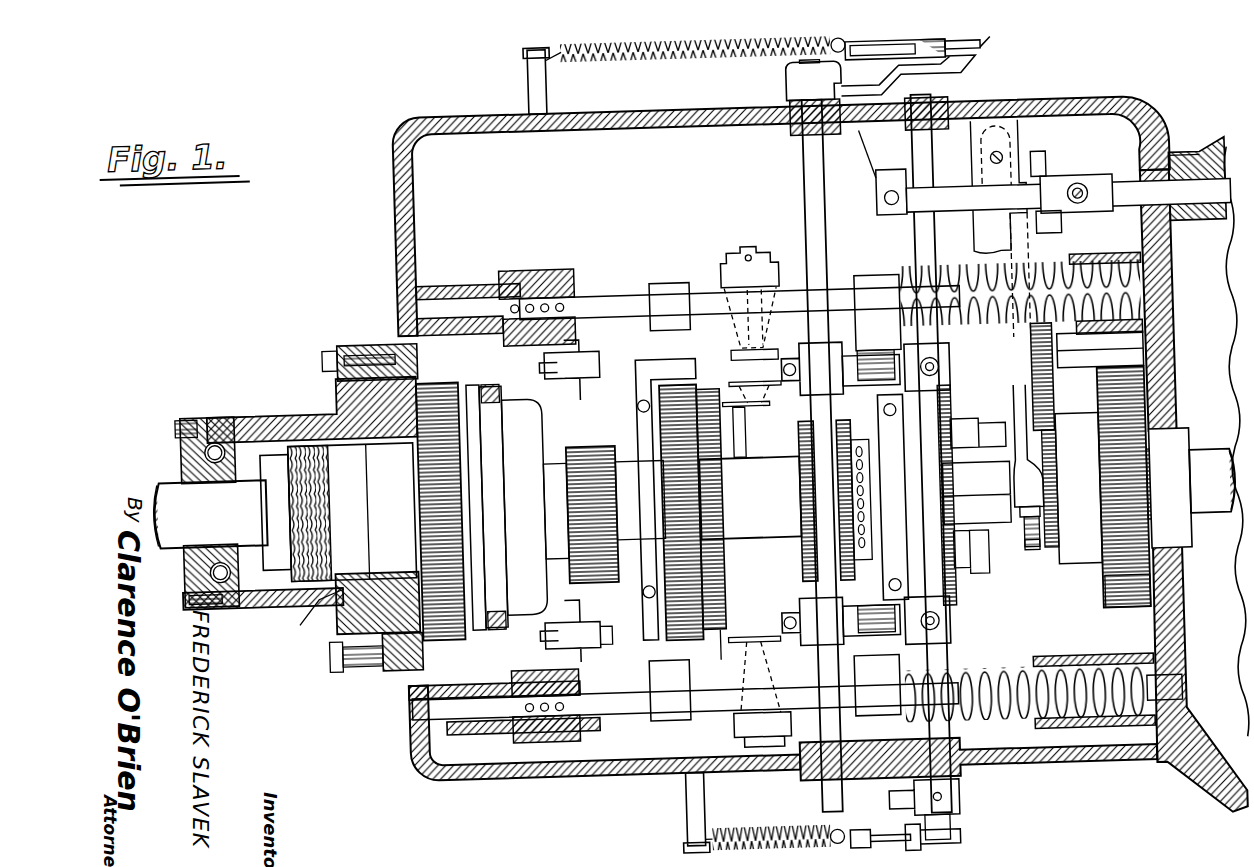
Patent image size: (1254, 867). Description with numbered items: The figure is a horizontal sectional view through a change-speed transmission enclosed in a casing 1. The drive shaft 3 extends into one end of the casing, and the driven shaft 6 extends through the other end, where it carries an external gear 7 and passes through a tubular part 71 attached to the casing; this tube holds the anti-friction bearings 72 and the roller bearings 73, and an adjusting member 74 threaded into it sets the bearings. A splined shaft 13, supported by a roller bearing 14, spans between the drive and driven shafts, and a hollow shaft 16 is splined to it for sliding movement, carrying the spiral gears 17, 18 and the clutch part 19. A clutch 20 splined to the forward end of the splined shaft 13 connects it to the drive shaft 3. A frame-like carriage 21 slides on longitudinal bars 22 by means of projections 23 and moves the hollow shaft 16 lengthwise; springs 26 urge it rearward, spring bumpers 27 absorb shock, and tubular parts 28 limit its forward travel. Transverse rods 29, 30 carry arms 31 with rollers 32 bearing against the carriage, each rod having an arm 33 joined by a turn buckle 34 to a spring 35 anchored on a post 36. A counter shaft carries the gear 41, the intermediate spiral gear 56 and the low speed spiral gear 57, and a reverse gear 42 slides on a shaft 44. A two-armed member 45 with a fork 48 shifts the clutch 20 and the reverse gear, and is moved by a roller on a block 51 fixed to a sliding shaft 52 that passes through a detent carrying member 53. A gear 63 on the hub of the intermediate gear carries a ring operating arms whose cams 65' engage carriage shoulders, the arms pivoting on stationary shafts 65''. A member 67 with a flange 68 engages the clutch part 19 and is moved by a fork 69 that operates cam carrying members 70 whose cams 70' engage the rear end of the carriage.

The casing 1 is at (421, 199).
The drive shaft 3 is at (1193, 487).
The driven shaft 6 is at (210, 514).
The external gear 7 is at (440, 375).
The splined shaft 13 is at (988, 506).
The roller bearing 14 is at (1108, 570).
The hollow shaft 16 is at (750, 497).
The spiral gear 17 is at (854, 513).
The spiral gear 18 is at (697, 508).
The clutch part 19 is at (588, 444).
The clutch 20 is at (1038, 557).
The carriage 21 is at (655, 361).
The longitudinally extending bars 22 is at (600, 303).
The projections 23 is at (663, 282).
The springs 26 is at (1126, 300).
The spring bumpers 27 is at (533, 265).
The tubular parts 28 is at (1114, 265).
The transverse rod 29 is at (980, 235).
The transverse rod 30 is at (812, 186).
The arms 31 is at (809, 397).
The rollers 32 is at (873, 360).
The arm 33 is at (939, 77).
The turn buckle 34 is at (960, 44).
The spring 35 is at (741, 54).
The post 36 is at (559, 78).
The gear 41 is at (1124, 618).
The gear 42 is at (1050, 400).
The shaft 44 is at (1124, 364).
The two-armed member 45 is at (1054, 469).
The fork 48 is at (1026, 562).
The block 51 is at (1109, 192).
The sliding shaft 52 is at (1194, 184).
The detent carrying member 53 is at (875, 167).
The intermediate spiral gear 56 is at (711, 389).
The low speed spiral gear 57 is at (950, 417).
The gear 63 is at (714, 648).
The cam 65' is at (748, 484).
The stationary shafts 65'' is at (759, 284).
The member 67 is at (497, 378).
The flange 68 is at (535, 506).
The fork 69 is at (476, 376).
The cam carrying members 70 is at (570, 494).
The cams 70' is at (609, 657).
The tubular part 71 is at (269, 413).
The anti-friction bearings 72 is at (233, 414).
The roller bearings 73 is at (338, 512).
The adjusting member 74 is at (317, 620).